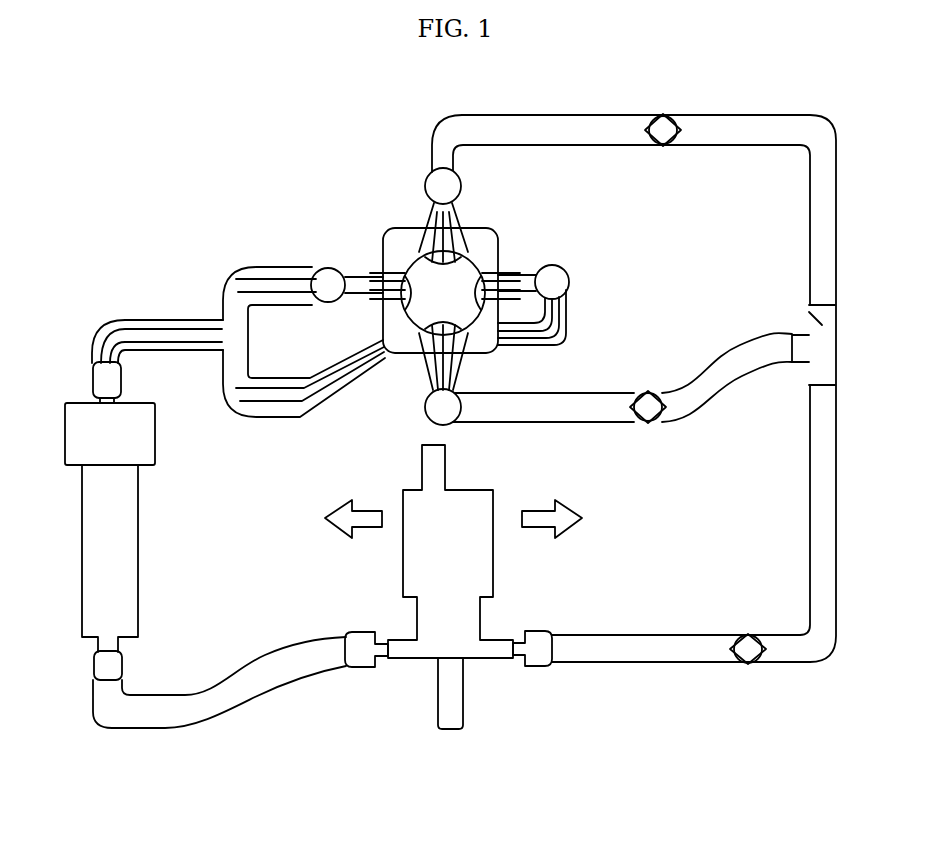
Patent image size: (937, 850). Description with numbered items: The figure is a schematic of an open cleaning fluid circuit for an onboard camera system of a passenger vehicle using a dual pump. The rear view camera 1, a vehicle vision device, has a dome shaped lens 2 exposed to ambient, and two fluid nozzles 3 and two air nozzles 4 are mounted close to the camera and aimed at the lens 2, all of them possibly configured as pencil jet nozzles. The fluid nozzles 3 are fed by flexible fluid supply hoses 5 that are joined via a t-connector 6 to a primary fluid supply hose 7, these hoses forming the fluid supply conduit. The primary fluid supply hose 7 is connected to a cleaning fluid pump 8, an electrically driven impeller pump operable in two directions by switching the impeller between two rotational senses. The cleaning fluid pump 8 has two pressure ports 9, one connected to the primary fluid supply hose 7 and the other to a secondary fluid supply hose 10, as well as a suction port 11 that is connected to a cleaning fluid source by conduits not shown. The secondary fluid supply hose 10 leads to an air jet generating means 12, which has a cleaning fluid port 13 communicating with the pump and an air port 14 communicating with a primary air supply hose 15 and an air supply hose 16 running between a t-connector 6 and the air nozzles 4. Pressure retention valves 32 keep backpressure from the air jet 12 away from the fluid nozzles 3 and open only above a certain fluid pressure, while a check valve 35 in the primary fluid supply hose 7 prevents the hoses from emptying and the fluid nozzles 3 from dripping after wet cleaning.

The rear view camera 1 is at (494, 214).
The dome shaped lens 2 is at (457, 274).
The fluid nozzles 3 is at (427, 184).
The air nozzles 4 is at (223, 313).
The flexible fluid supply hoses 5 is at (618, 126).
The t-connector 6 is at (328, 268).
The primary fluid supply hose 7 is at (690, 650).
The cleaning fluid pump 8 is at (438, 564).
The pressure ports 9 is at (375, 669).
The secondary fluid supply hose 10 is at (160, 732).
The suction port 11 is at (437, 723).
The air jet generating means 12 is at (96, 549).
The cleaning fluid port 13 is at (116, 666).
The air port 14 is at (96, 381).
The primary air supply hose 15 is at (143, 320).
The air supply hose 16 is at (262, 267).
The pressure retention valves 32 is at (662, 150).
The check valve 35 is at (745, 634).